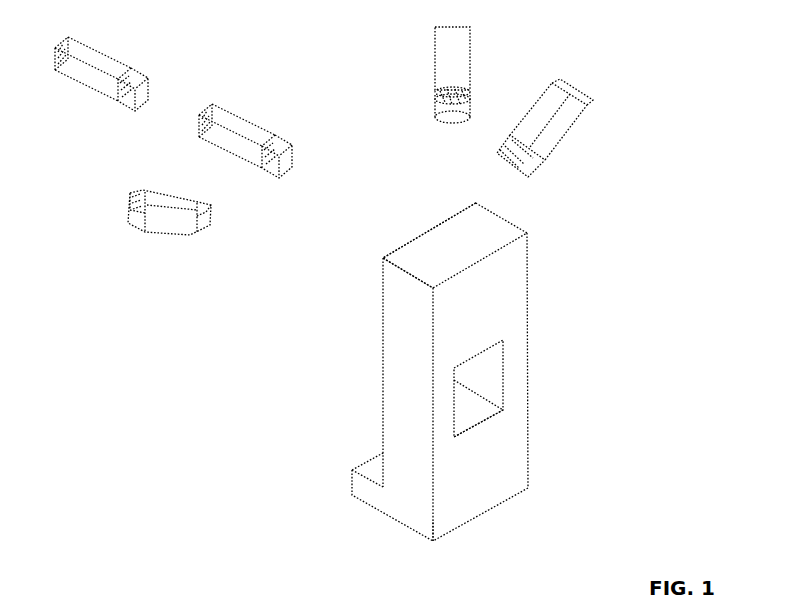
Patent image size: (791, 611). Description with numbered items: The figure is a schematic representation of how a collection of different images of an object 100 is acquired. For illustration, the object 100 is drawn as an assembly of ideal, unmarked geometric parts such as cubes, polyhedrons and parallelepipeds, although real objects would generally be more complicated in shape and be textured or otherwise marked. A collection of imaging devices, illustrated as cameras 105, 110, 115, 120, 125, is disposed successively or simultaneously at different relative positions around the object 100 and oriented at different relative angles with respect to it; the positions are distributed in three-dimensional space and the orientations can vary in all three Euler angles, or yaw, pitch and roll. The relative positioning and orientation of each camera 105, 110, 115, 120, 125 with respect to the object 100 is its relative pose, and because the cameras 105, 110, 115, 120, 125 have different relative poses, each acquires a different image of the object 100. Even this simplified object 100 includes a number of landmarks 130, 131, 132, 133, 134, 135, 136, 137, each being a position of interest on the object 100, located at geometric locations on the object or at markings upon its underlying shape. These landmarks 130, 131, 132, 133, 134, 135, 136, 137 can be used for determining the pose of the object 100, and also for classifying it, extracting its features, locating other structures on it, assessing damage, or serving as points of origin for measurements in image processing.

The object 100 is at (437, 381).
The camera 105 is at (102, 58).
The camera 110 is at (235, 118).
The camera 115 is at (140, 212).
The camera 120 is at (442, 68).
The camera 125 is at (557, 132).
The landmark 130 is at (527, 233).
The landmark 131 is at (458, 367).
The landmark 132 is at (383, 258).
The landmark 133 is at (352, 470).
The landmark 134 is at (352, 495).
The landmark 135 is at (503, 408).
The landmark 136 is at (528, 488).
The landmark 137 is at (433, 541).